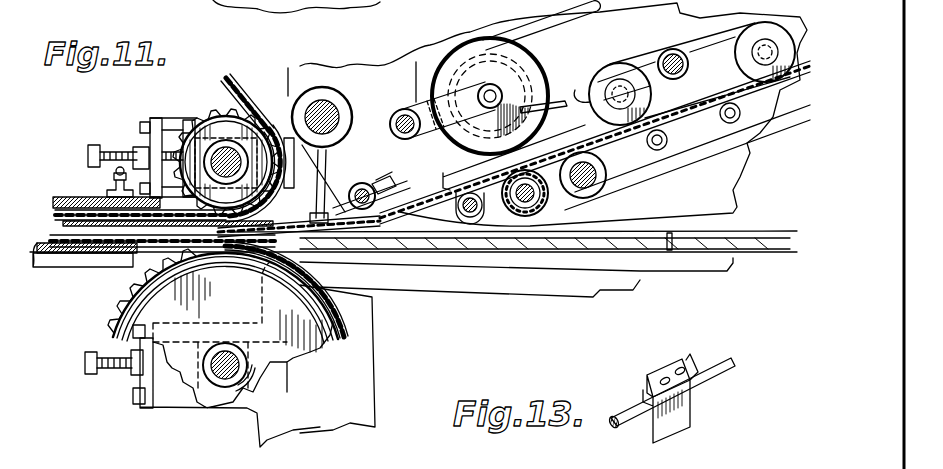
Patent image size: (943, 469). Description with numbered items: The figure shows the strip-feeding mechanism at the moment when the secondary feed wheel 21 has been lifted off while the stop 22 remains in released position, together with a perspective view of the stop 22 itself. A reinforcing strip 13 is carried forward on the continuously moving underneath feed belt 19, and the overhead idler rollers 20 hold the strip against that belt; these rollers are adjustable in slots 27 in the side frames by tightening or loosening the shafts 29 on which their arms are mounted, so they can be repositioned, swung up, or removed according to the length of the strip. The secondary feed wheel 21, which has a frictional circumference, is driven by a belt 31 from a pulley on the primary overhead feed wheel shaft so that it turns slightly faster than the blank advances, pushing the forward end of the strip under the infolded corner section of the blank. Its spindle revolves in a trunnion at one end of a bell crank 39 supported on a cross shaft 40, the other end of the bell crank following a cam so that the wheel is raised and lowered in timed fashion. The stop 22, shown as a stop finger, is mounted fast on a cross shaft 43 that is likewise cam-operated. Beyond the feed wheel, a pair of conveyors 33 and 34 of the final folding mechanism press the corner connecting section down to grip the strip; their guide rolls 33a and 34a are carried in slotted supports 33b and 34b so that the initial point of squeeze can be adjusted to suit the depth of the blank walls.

In FIG. 11, the strip 13 is at (280, 220).
In FIG. 11, the underneath feed belt 19 is at (667, 167).
In FIG. 11, the overhead idler rollers 20 is at (601, 64).
In FIG. 11, the secondary feed wheel 21 is at (494, 37).
In FIG. 11, the stop 22 is at (343, 203).
In FIG. 13, the stop 22 is at (693, 417).
In FIG. 11, the slots 27 is at (701, 48).
In FIG. 11, the shafts 29 is at (662, 51).
In FIG. 11, the belt 31 is at (568, 15).
In FIG. 11, the conveyor 33 is at (236, 79).
In FIG. 11, the guide roll 33a is at (214, 114).
In FIG. 11, the slotted support 33b is at (160, 118).
In FIG. 11, the conveyor 34 is at (232, 252).
In FIG. 11, the guide roll 34a is at (128, 315).
In FIG. 11, the slotted support 34b is at (133, 395).
In FIG. 11, the bell crank 39 is at (395, 93).
In FIG. 11, the cross shaft 40 is at (407, 138).
In FIG. 11, the cross shaft 43 is at (375, 181).